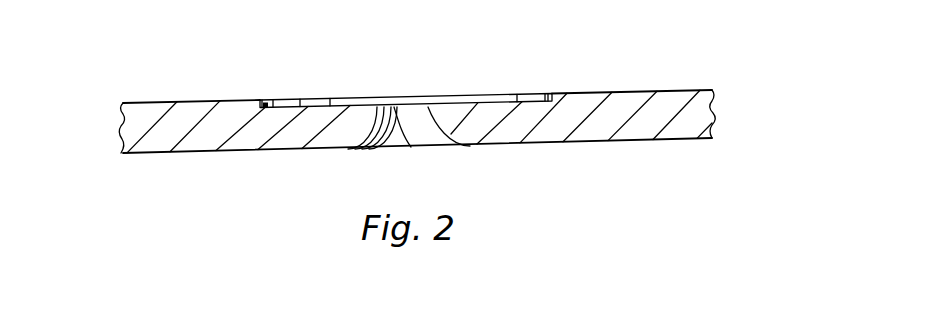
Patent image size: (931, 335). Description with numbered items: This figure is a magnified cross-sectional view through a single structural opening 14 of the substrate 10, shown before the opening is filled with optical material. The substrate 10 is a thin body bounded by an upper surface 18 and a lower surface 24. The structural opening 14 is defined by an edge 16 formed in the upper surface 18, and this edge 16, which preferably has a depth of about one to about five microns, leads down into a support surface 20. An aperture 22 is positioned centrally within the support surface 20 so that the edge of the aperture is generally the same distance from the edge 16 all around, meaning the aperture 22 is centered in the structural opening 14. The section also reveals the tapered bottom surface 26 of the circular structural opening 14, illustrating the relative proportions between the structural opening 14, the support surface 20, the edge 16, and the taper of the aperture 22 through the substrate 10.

The substrate 10 is at (417, 120).
The structural opening 14 is at (425, 57).
The edge 16 is at (268, 101).
The upper surface 18 is at (151, 102).
The support surface 20 is at (482, 103).
The aperture 22 is at (411, 147).
The lower surface 24 is at (160, 155).
The tapered bottom surface 26 is at (435, 132).